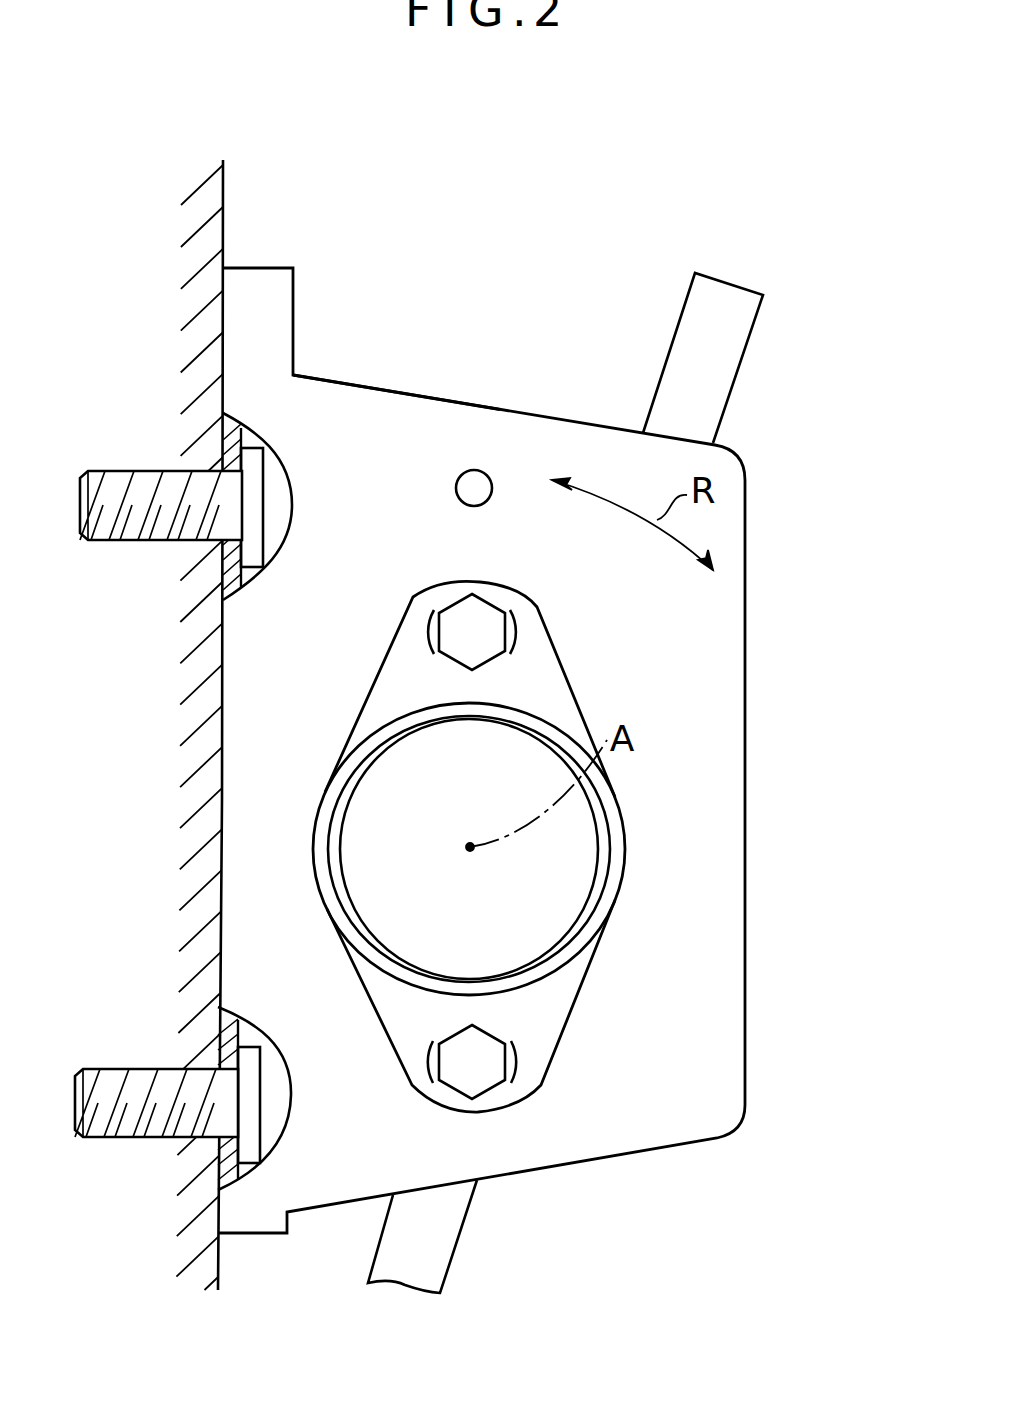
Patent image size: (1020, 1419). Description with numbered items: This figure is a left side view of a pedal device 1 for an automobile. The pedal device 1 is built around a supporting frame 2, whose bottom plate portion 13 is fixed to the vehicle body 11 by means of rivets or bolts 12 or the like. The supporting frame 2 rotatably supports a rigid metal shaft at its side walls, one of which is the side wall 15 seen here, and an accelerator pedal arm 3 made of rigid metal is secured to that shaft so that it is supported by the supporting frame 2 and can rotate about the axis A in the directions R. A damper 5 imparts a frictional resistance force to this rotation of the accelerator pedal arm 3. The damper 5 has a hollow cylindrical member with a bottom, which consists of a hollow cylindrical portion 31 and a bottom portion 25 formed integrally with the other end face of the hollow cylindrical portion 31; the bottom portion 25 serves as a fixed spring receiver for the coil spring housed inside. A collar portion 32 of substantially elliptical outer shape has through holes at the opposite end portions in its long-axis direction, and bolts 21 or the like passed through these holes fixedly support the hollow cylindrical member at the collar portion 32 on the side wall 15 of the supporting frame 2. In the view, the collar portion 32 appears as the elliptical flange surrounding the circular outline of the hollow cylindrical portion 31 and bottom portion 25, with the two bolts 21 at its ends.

The pedal device 1 is at (795, 388).
The supporting frame 2 is at (492, 392).
The accelerator pedal arm 3 is at (690, 355).
The damper 5 is at (499, 849).
The vehicle body 11 is at (217, 198).
The bolts 12 is at (133, 473).
The bottom plate portion 13 is at (230, 1030).
The side wall 15 is at (382, 412).
The bolts 21 is at (462, 620).
The bottom portion 25 is at (573, 905).
The hollow cylindrical portion 31 is at (602, 817).
The collar portion 32 is at (542, 1023).